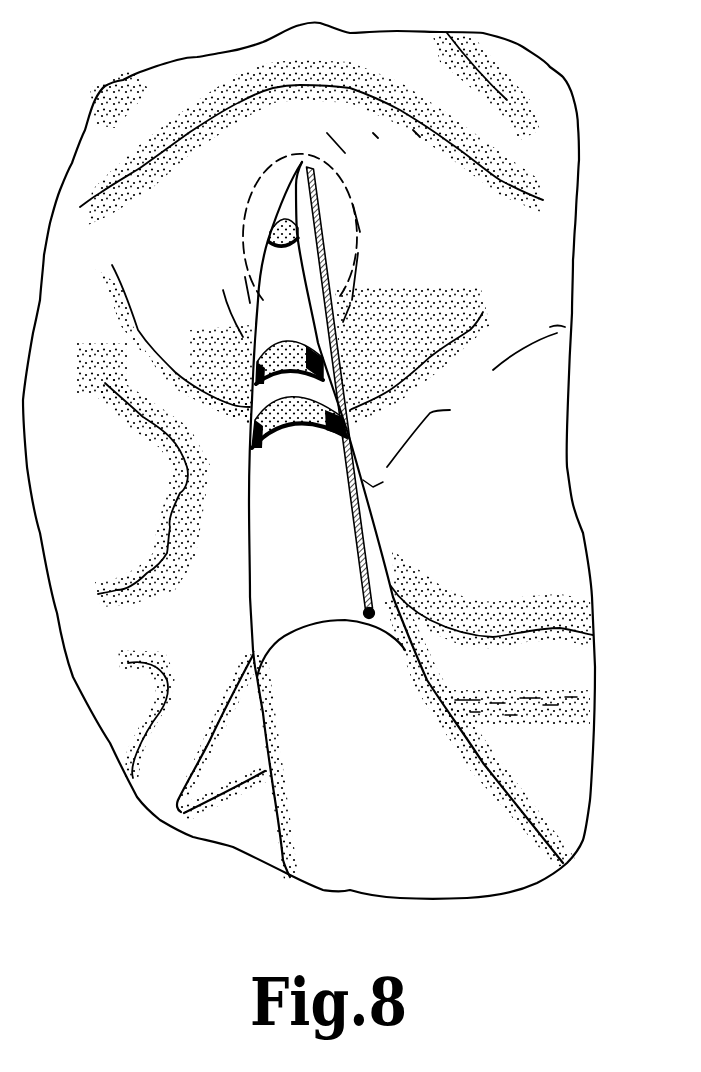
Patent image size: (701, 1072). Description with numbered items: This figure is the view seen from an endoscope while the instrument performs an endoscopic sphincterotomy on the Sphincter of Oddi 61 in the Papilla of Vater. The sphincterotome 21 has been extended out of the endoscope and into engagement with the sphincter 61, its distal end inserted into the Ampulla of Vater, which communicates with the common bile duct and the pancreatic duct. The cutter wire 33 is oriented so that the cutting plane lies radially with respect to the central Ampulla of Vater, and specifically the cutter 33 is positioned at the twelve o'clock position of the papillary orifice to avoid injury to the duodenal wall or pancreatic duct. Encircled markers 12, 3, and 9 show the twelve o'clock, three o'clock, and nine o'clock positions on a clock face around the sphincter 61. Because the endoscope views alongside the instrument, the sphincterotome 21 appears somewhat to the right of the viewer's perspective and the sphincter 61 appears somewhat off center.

The twelve o'clock position 12 is at (300, 90).
The nine o'clock position 9 is at (226, 238).
The three o'clock position 3 is at (392, 238).
The Sphincter of Oddi 61 is at (360, 177).
The sphincterotome 21 is at (252, 589).
The cutter wire 33 is at (369, 558).